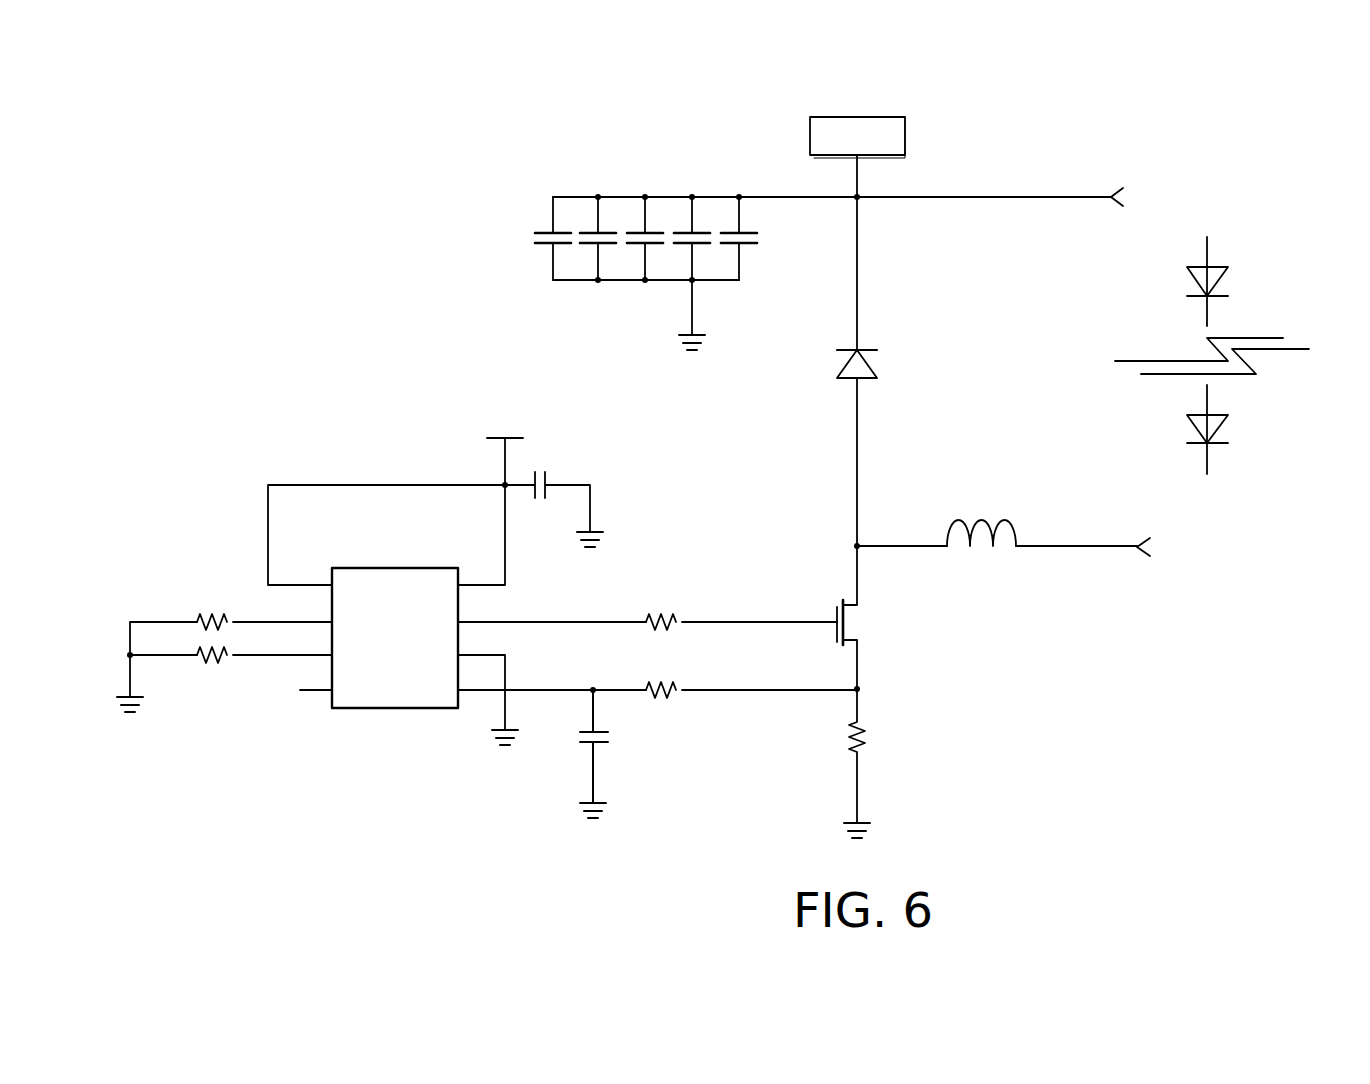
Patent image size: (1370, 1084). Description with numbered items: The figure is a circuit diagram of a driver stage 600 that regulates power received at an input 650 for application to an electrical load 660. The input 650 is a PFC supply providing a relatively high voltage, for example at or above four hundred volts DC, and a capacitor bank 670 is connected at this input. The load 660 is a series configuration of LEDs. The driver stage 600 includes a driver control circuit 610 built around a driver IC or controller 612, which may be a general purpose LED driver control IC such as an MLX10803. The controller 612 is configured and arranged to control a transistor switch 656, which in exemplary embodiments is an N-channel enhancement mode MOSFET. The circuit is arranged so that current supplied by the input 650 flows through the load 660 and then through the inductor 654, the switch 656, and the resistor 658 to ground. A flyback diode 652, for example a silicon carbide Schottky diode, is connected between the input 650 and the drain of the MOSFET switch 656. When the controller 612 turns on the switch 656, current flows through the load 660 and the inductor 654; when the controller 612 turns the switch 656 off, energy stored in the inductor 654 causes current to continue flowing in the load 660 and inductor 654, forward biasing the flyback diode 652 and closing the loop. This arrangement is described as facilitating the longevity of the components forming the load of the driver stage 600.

The driver stage 600 is at (292, 146).
The driver control circuit 610 is at (685, 835).
The driver IC controller 612 is at (365, 568).
The input 650 is at (825, 116).
The flyback diode 652 is at (871, 350).
The inductor 654 is at (1014, 601).
The transistor switch 656 is at (897, 704).
The resistor 658 is at (862, 755).
The electrical load 660 is at (1333, 615).
The capacitor bank 670 is at (518, 132).